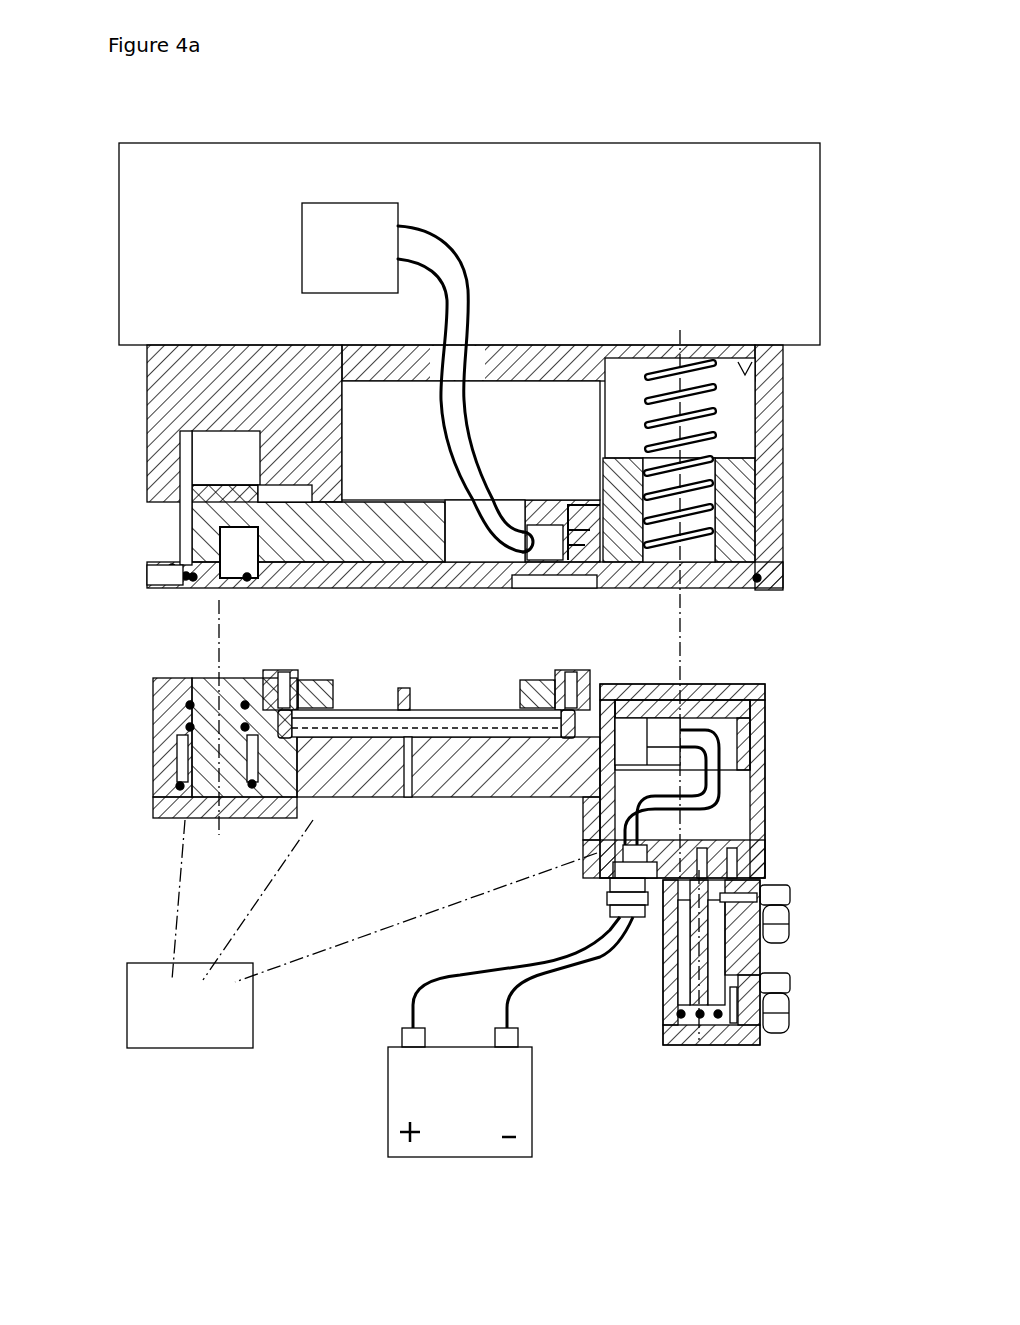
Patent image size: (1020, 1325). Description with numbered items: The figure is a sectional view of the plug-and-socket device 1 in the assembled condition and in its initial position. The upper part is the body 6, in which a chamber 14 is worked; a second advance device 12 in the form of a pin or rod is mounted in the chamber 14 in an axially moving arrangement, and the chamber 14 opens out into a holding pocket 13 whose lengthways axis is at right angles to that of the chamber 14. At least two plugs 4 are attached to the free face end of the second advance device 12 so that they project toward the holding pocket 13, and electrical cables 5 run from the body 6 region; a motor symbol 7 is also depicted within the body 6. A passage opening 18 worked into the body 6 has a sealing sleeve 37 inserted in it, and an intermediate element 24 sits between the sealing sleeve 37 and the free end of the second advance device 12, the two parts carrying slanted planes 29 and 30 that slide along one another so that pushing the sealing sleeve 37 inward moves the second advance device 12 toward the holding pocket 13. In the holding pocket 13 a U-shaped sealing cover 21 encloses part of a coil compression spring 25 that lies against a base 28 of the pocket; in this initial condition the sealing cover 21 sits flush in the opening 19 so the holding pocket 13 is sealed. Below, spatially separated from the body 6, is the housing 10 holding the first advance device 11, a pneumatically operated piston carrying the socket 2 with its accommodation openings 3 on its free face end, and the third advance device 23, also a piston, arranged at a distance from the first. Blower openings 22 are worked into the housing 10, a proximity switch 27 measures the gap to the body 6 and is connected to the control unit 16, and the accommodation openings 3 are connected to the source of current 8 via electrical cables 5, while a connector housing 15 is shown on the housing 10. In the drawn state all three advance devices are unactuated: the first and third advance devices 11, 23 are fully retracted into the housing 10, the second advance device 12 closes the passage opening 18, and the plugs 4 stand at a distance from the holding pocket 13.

The plug-and-socket device 1 is at (642, 66).
The socket 2 is at (657, 727).
The accommodation openings 3 is at (697, 772).
The plugs 4 is at (556, 540).
The electrical cables 5 is at (433, 272).
The body 6 is at (760, 185).
The motor 7 is at (348, 200).
The source of current 8 is at (421, 1068).
The housing 10 is at (152, 722).
The first advance device 11 is at (842, 904).
The second advance device 12 is at (330, 540).
The holding pocket 13 is at (740, 423).
The chamber 14 is at (465, 522).
The connector housing 15 is at (760, 685).
The control unit 16 is at (160, 1018).
The passage opening 18 is at (250, 458).
The opening of the holding pocket 19 is at (740, 576).
The sealing cover 21 is at (733, 517).
The blower openings 22 is at (262, 672).
The third advance device 23 is at (192, 763).
The intermediate element 24 is at (167, 587).
The coil compression spring 25 is at (713, 392).
The proximity switch 27 is at (390, 720).
The base of the holding pocket 28 is at (745, 365).
The slanted plane 29 is at (240, 547).
The slanted plane 30 is at (200, 503).
The sealing sleeve 37 is at (182, 468).